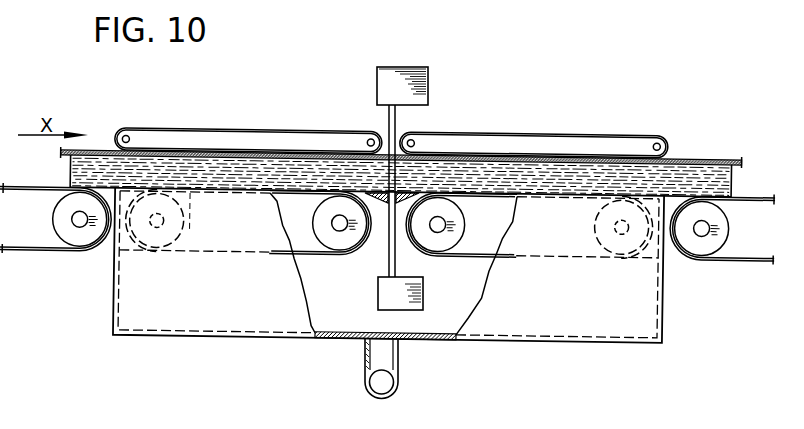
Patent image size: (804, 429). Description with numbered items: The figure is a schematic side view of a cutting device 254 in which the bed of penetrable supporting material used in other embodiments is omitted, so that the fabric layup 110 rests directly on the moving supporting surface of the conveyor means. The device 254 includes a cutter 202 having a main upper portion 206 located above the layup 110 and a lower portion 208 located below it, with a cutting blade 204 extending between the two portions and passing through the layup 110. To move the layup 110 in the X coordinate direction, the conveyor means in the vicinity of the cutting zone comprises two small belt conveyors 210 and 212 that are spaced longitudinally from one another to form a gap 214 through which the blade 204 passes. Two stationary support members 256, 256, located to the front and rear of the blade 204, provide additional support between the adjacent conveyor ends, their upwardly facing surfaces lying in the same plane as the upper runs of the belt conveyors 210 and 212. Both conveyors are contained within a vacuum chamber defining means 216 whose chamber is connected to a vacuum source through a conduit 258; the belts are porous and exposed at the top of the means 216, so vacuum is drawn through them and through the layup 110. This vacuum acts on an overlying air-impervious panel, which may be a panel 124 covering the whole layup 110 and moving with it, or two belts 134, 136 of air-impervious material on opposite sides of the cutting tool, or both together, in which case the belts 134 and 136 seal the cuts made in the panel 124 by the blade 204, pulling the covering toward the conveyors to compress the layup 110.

The fabric layup 110 is at (731, 177).
The panel 124 is at (674, 160).
The belt 134 is at (190, 127).
The belt 136 is at (564, 132).
The cutter 202 is at (389, 60).
The cutting blade 204 is at (388, 125).
The main upper portion 206 is at (415, 77).
The lower portion 208 is at (382, 297).
The belt conveyor 210 is at (305, 253).
The belt conveyor 212 is at (476, 254).
The gap 214 is at (383, 226).
The vacuum chamber defining means 216 is at (676, 303).
The cutting device 254 is at (450, 112).
The stationary support member 256 is at (405, 192).
The conduit 258 is at (398, 362).